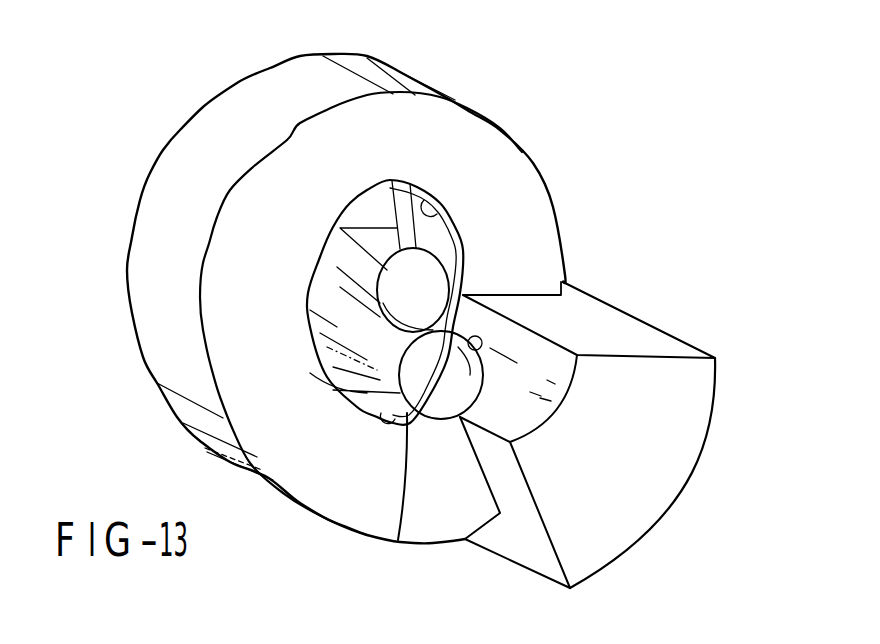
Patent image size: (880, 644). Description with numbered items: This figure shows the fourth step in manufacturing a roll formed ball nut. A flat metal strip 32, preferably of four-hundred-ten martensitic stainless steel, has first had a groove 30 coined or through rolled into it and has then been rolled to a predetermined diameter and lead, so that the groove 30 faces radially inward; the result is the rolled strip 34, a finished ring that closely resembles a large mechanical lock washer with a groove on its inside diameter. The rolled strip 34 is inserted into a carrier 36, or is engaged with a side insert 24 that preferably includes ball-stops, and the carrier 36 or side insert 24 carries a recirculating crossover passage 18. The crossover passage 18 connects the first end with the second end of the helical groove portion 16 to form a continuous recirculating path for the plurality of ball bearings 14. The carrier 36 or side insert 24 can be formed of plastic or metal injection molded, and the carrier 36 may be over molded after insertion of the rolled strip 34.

The rolled strip 34 is at (153, 163).
The flat metal strip 32 is at (160, 293).
The groove 30 is at (430, 217).
The ball bearings 14 is at (430, 273).
The recirculating crossover passage 18 is at (485, 346).
The side insert 24 is at (717, 412).
The carrier 36 is at (650, 500).
The helical groove portion 16 is at (398, 540).